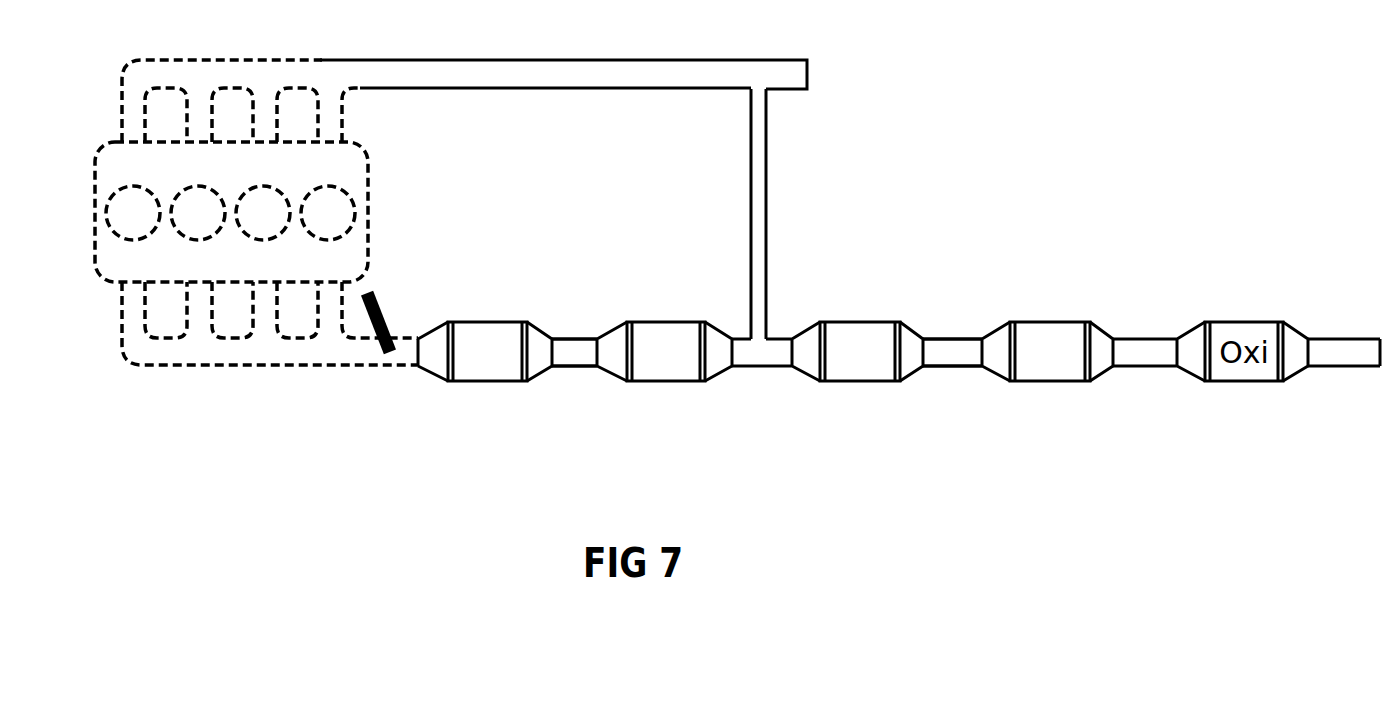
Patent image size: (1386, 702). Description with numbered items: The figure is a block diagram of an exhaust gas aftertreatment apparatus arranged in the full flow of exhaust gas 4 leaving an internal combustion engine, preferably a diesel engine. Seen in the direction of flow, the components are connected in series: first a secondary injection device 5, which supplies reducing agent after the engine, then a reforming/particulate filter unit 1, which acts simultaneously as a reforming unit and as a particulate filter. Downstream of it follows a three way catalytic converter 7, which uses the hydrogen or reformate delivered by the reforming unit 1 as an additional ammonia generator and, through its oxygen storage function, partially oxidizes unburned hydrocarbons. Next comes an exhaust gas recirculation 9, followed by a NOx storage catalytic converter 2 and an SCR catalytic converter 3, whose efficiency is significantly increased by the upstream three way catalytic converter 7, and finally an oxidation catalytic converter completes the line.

The reforming/particulate filter unit 1 is at (487, 351).
The NOx storage catalytic converter 2 is at (860, 351).
The SCR catalytic converter 3 is at (1050, 351).
The three way catalytic converter 7 is at (666, 351).
The exhaust gas 4 is at (570, 347).
The secondary injection device 5 is at (384, 309).
The exhaust gas recirculation 9 is at (763, 197).